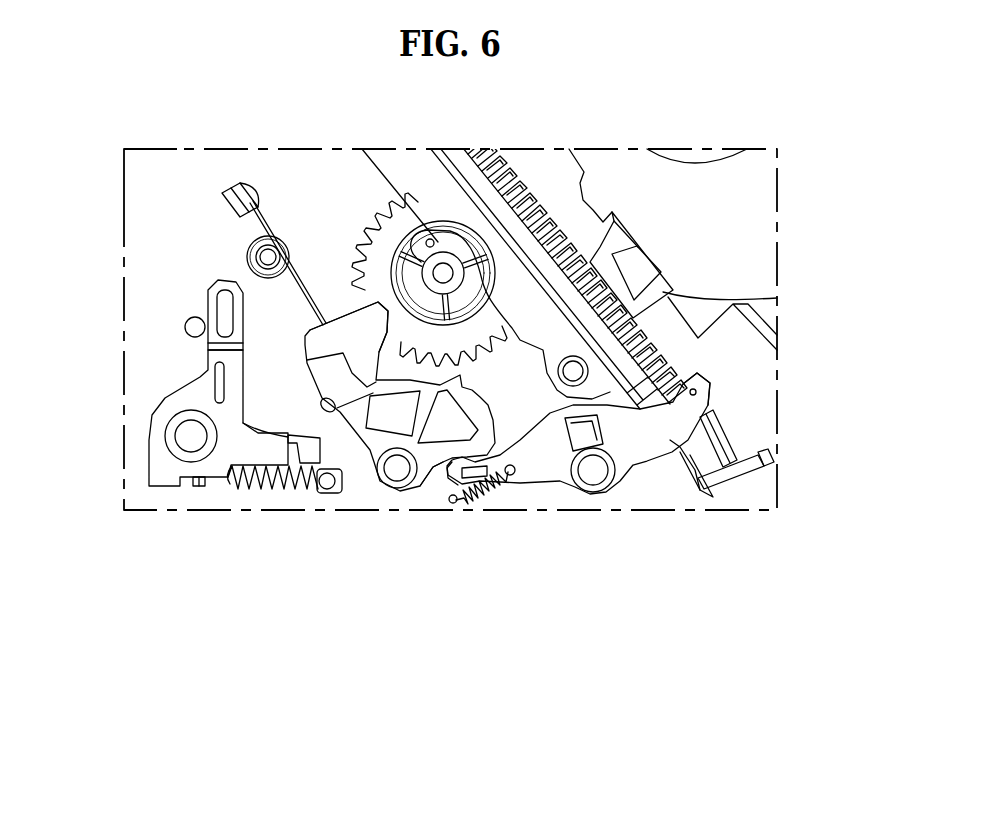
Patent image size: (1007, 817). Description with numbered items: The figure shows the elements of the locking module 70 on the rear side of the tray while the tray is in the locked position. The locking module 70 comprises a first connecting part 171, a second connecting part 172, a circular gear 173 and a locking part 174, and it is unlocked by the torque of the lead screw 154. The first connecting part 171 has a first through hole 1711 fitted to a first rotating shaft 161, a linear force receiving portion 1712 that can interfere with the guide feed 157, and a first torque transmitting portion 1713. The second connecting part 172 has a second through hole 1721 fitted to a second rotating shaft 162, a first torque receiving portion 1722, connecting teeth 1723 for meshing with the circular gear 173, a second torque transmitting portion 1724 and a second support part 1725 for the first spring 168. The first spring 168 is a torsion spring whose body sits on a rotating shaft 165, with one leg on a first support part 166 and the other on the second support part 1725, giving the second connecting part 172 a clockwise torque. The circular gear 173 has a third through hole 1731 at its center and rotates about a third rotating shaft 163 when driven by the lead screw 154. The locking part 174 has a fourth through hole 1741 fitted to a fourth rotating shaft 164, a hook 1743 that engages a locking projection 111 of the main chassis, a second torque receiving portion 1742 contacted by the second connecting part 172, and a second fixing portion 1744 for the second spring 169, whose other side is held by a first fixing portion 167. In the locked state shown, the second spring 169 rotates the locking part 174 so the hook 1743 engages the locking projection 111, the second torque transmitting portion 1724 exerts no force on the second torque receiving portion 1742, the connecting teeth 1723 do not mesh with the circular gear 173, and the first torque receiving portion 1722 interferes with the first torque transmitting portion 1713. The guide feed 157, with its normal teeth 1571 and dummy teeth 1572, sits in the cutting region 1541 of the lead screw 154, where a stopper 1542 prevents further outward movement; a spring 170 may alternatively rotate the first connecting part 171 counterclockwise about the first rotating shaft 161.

The locking module 70 is at (653, 592).
The locking projection 111 is at (186, 328).
The lead screw 154 is at (521, 178).
The cutting region 1541 is at (712, 437).
The stopper 1542 is at (762, 466).
The guide feed 157 is at (602, 232).
The normal teeth 1571 is at (600, 280).
The dummy teeth 1572 is at (597, 262).
The first rotating shaft 161 is at (596, 483).
The second rotating shaft 162 is at (398, 483).
The third rotating shaft 163 is at (443, 268).
The third through hole 1731 is at (420, 250).
The fourth rotating shaft 164 is at (186, 437).
The rotating shaft for the first spring 165 is at (262, 258).
The first support part for the first spring 166 is at (250, 192).
The first fixing portion for the second spring 167 is at (326, 494).
The first spring 168 is at (262, 232).
The second spring 169 is at (252, 491).
The spring 170 is at (500, 500).
The first connecting part 171 is at (582, 482).
The first through hole 1711 is at (575, 488).
The linear force receiving portion 1712 is at (700, 400).
The first torque transmitting portion 1713 is at (460, 476).
The second connecting part 172 is at (296, 462).
The second through hole 1721 is at (390, 493).
The first torque receiving portion 1722 is at (441, 480).
The connecting teeth 1723 is at (514, 476).
The second torque transmitting portion 1724 is at (320, 405).
The second support part for the first spring 1725 is at (320, 387).
The circular gear 173 is at (198, 357).
The locking part 174 is at (188, 435).
The fourth through hole 1741 is at (176, 454).
The second torque receiving portion 1742 is at (298, 448).
The hook 1743 is at (200, 305).
The second fixing portion for the second spring 1744 is at (200, 488).